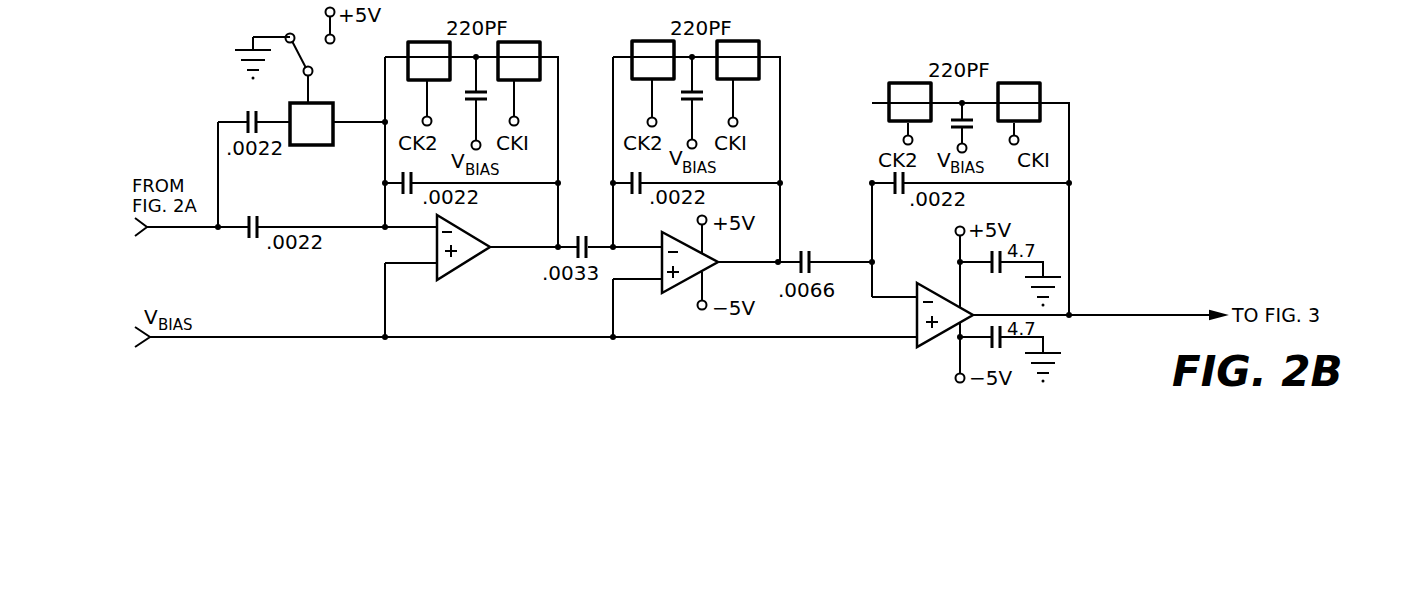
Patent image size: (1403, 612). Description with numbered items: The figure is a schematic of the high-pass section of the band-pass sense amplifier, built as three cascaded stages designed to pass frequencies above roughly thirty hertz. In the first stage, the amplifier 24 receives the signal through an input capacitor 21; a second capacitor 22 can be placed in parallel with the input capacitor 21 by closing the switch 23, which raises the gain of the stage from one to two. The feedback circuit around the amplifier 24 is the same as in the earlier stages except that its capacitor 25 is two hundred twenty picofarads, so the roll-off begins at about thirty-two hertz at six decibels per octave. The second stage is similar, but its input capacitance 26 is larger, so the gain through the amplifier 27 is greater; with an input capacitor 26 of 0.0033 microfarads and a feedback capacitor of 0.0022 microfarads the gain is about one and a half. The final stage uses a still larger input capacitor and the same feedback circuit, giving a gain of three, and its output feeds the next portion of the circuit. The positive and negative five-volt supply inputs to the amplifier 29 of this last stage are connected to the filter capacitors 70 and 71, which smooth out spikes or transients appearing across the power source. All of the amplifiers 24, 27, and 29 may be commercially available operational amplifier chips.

The input capacitor 21 is at (263, 220).
The capacitor 22 is at (245, 112).
The switch 23 is at (320, 100).
The amplifier 24 is at (470, 262).
The capacitor 25 is at (478, 90).
The input capacitance 26 is at (597, 218).
The amplifier 27 is at (668, 290).
The amplifier 29 is at (937, 342).
The filter capacitor 70 is at (992, 266).
The filter capacitor 71 is at (995, 340).